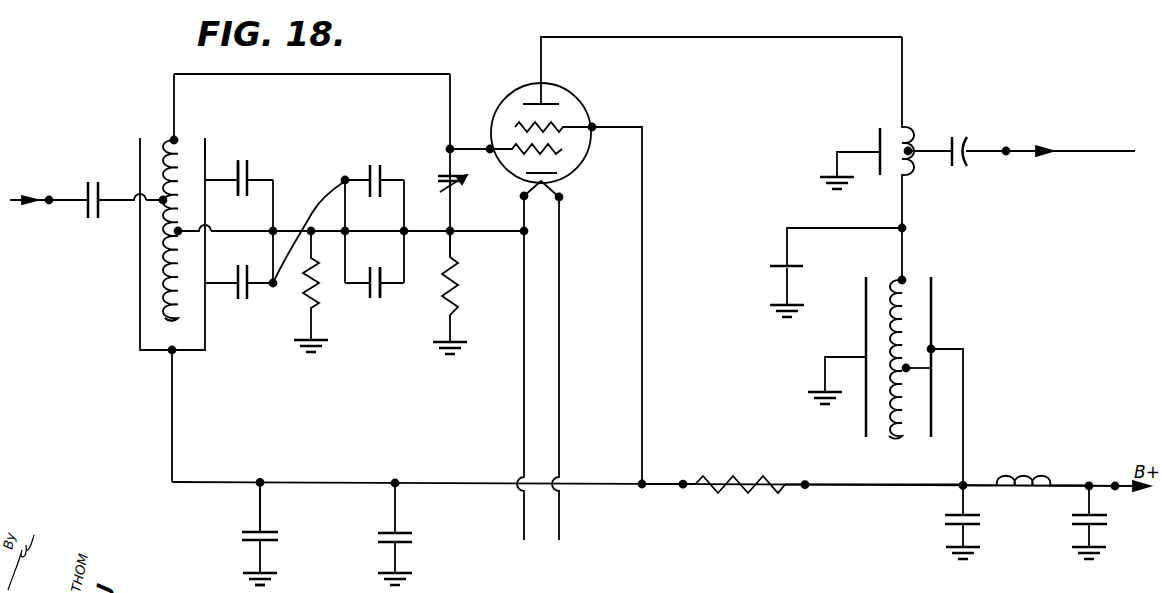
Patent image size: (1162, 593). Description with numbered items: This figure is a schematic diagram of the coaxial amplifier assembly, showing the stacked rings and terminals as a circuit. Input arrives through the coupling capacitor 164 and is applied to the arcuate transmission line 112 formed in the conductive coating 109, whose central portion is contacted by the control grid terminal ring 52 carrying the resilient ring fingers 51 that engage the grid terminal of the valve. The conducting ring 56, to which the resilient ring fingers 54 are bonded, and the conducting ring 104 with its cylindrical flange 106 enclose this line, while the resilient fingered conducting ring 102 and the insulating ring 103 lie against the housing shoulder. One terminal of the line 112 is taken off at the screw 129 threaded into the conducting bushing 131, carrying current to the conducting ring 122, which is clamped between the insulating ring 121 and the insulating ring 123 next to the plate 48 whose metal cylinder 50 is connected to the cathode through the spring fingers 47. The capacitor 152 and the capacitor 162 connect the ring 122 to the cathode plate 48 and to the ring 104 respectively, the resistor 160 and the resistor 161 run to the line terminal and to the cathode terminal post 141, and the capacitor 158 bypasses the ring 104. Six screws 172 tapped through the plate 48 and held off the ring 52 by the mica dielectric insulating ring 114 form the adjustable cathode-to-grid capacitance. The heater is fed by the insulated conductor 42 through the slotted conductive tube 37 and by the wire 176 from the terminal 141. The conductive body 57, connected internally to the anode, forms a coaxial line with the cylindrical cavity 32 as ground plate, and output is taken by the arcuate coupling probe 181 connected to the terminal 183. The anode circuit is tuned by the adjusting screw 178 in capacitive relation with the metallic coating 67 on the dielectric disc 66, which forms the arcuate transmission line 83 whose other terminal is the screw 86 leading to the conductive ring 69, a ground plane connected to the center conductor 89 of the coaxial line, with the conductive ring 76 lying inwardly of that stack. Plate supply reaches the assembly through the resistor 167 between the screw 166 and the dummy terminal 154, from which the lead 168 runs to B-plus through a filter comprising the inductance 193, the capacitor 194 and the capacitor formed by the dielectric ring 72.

The coupling capacitor 164 is at (82, 212).
The conducting ring 56 is at (140, 278).
The conducting ring 104 is at (205, 140).
The cylindrical flange 106 is at (150, 350).
The conductive coating 109 is at (173, 140).
The arcuate transmission line 112 is at (165, 312).
The insulating ring 121 is at (247, 160).
The conducting ring 122 is at (250, 166).
The screw 129 is at (245, 228).
The capacitor 162 is at (240, 298).
The conducting bushing 131 is at (309, 232).
The resistor 160 is at (313, 304).
The capacitor 152 is at (372, 165).
The insulating ring 123 is at (373, 302).
The circular metal plate 48 is at (385, 296).
The dielectric insulating ring 114 is at (440, 186).
The screws 172 is at (458, 185).
The control grid terminal ring 52 is at (459, 176).
The terminal post 141 is at (450, 231).
The resistor 161 is at (462, 287).
The metal cylinder 50 is at (478, 235).
The resilient ring fingers 54 is at (593, 125).
The resilient ring fingers 51 is at (490, 149).
The spring fingers 47 is at (524, 196).
The slotted conductive tube 37 is at (560, 197).
The wire 176 is at (523, 395).
The insulated conductor 42 is at (560, 277).
The insulating ring 103 is at (240, 533).
The resilient fingered conducting ring 102 is at (271, 543).
The capacitor 158 is at (410, 536).
The screw 166 is at (683, 482).
The resistor 167 is at (758, 495).
The dummy terminal 154 is at (805, 484).
The dielectric ring 72 is at (945, 518).
The lead 168 is at (977, 482).
The inductance 193 is at (1027, 476).
The capacitor 194 is at (1073, 523).
The conductive body 57 is at (907, 138).
The circular cylindrical cavity 32 is at (880, 139).
The arcuate coupling probe 181 is at (962, 163).
The terminal 183 is at (1018, 150).
The metallic coating 67 is at (901, 280).
The dielectric disc 66 is at (793, 271).
The adjusting screw 178 is at (790, 275).
The arcuate transmission line 83 is at (910, 287).
The screw 86 is at (920, 371).
The conductive ring 76 is at (866, 423).
The conductive ring 69 is at (933, 300).
The center conductor 89 is at (963, 378).